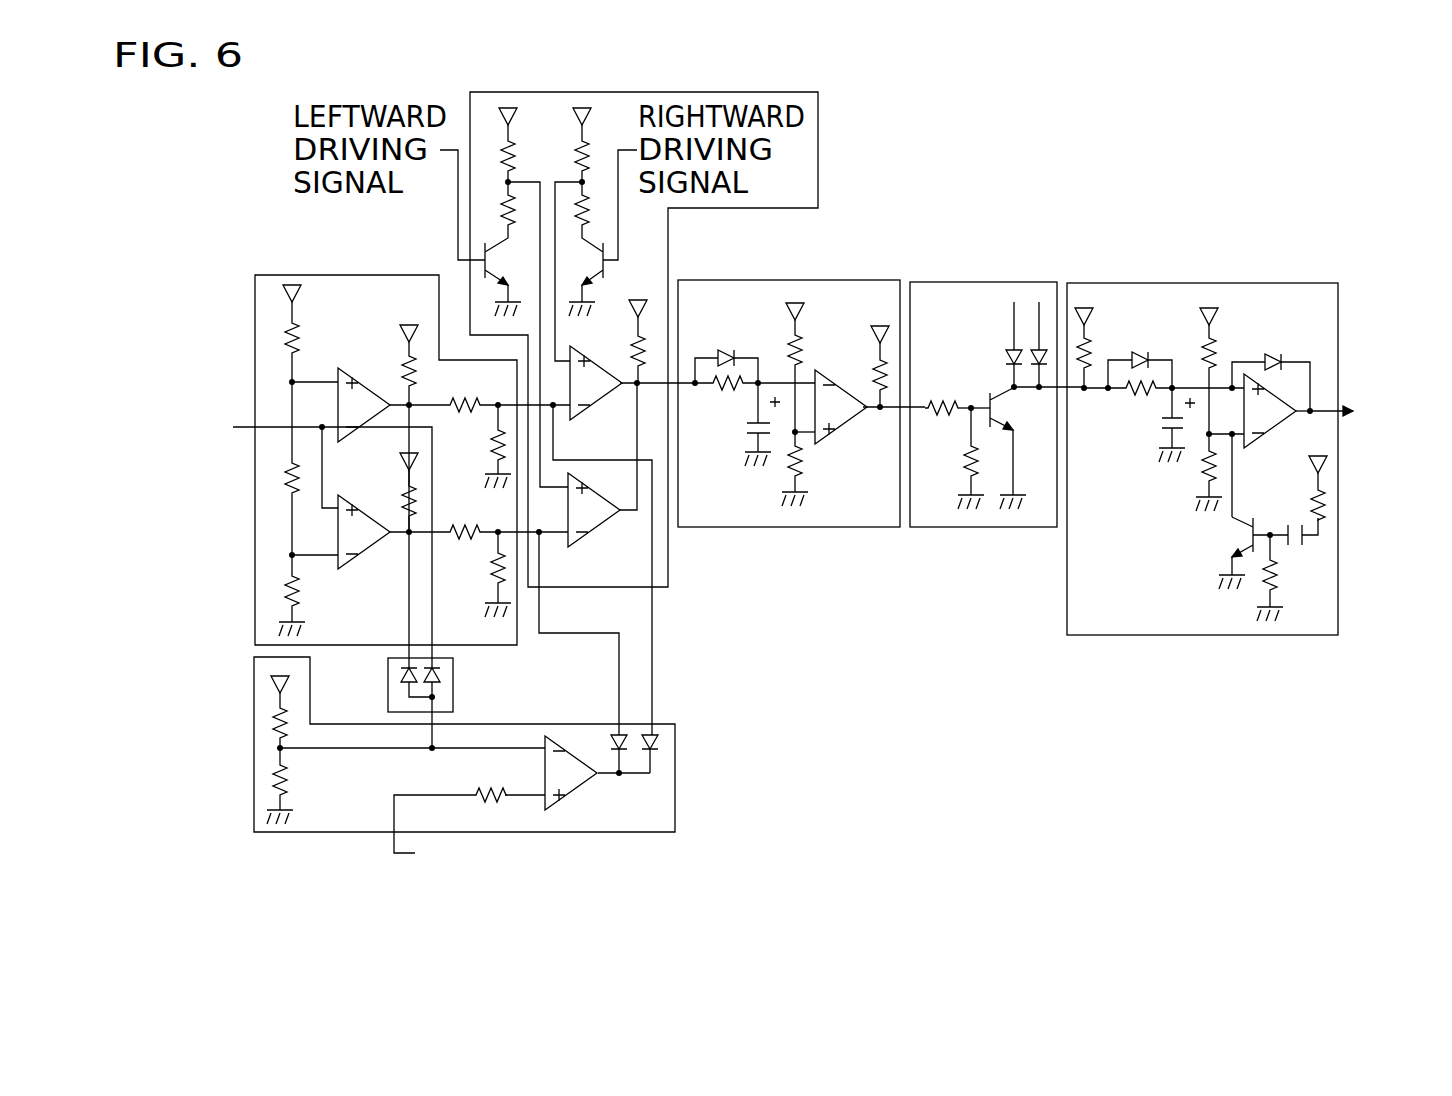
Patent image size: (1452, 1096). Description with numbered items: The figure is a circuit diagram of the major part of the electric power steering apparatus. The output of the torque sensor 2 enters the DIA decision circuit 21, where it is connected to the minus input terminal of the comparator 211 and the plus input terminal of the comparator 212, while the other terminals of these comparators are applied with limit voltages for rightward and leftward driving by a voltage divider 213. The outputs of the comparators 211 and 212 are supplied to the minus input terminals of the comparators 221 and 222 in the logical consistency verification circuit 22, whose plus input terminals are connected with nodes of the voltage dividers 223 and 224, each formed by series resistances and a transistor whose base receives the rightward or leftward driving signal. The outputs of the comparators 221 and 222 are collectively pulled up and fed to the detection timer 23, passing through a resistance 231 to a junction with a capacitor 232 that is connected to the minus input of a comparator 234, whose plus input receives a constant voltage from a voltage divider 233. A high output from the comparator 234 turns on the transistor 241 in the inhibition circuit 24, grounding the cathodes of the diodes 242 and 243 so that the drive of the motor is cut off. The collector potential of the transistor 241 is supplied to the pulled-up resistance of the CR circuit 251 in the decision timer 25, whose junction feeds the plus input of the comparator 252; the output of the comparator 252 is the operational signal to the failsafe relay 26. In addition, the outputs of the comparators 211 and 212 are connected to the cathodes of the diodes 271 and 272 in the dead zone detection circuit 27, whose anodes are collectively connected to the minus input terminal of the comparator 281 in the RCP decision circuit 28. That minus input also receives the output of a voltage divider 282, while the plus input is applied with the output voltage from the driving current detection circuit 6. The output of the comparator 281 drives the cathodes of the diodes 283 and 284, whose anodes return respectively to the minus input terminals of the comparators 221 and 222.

The torque sensor 2 is at (273, 514).
The driving current detection circuit 6 is at (588, 847).
The DIA decision circuit 21 is at (313, 275).
The comparator 211 is at (373, 402).
The comparator 212 is at (376, 528).
The voltage divider 213 is at (292, 533).
The logical consistency verification circuit 22 is at (818, 125).
The comparator 221 is at (606, 396).
The comparator 222 is at (606, 522).
The voltage divider 223 is at (593, 183).
The voltage divider 224 is at (497, 183).
The detection timer 23 is at (818, 527).
The resistance 231 is at (734, 398).
The capacitor 232 is at (745, 428).
The voltage divider 233 is at (800, 350).
The comparator 234 is at (839, 420).
The inhibition circuit 24 is at (945, 527).
The transistor 241 is at (1025, 413).
The diode 242 is at (1005, 358).
The diode 243 is at (1035, 350).
The decision timer 25 is at (1155, 635).
The CR circuit 251 is at (1152, 405).
The comparator 252 is at (1265, 436).
The failsafe relay 26 is at (1381, 413).
The dead zone detection circuit 27 is at (455, 702).
The diode 271 is at (440, 675).
The diode 272 is at (405, 670).
The RCP decision circuit 28 is at (677, 802).
The comparator 281 is at (565, 798).
The voltage divider 282 is at (270, 777).
The diode 283 is at (657, 745).
The diode 284 is at (612, 740).